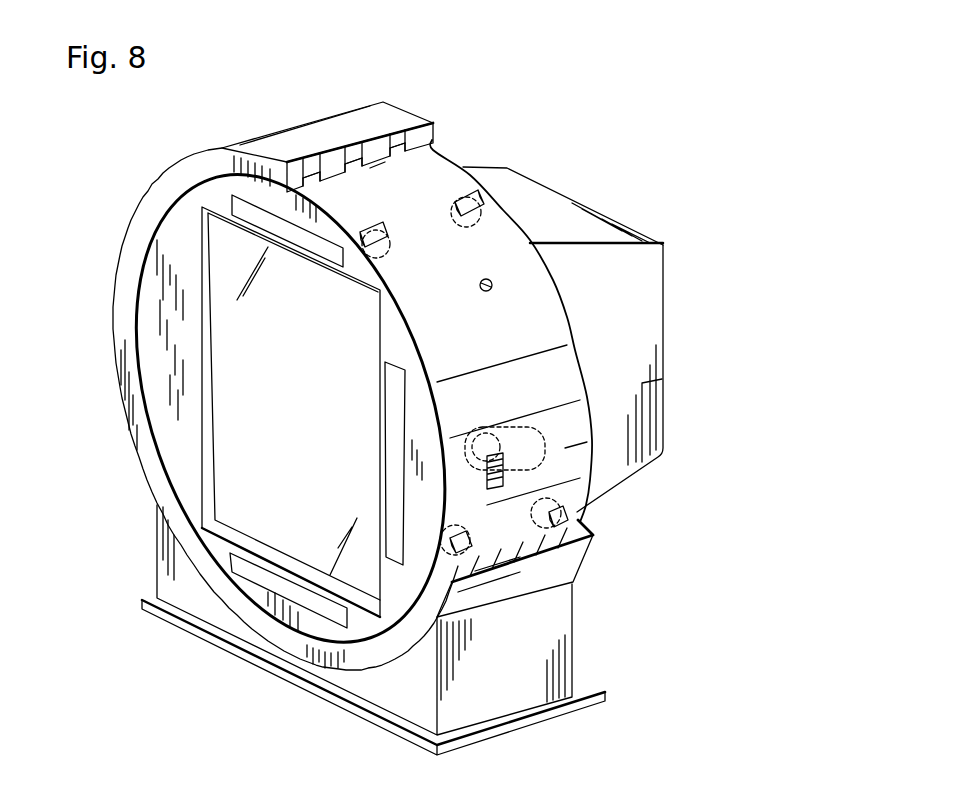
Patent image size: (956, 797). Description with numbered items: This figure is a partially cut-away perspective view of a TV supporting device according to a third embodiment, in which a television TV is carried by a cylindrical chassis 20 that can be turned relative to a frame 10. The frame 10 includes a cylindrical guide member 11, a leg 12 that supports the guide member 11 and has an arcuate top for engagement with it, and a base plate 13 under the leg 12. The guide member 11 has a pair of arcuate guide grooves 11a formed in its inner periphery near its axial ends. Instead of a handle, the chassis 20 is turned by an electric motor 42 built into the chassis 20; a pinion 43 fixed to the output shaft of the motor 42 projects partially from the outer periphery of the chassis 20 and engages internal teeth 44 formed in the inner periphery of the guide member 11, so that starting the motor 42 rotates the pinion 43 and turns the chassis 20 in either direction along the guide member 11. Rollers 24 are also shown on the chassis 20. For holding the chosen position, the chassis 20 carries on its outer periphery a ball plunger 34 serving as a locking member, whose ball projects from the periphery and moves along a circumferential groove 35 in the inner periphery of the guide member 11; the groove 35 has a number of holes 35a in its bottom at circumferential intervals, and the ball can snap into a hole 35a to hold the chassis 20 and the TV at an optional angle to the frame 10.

The frame 10 is at (492, 738).
The guide member 11 is at (288, 140).
The guide grooves 11a is at (303, 172).
The leg 12 is at (565, 647).
The base plate 13 is at (580, 706).
The chassis 20 is at (440, 152).
The rollers 24 is at (485, 203).
The ball plunger 34 is at (492, 286).
The circumferential groove 35 is at (527, 553).
The holes 35a is at (377, 160).
The electric motor 42 is at (498, 427).
The pinion 43 is at (497, 488).
The internal teeth 44 is at (343, 170).
The element TV is at (642, 383).